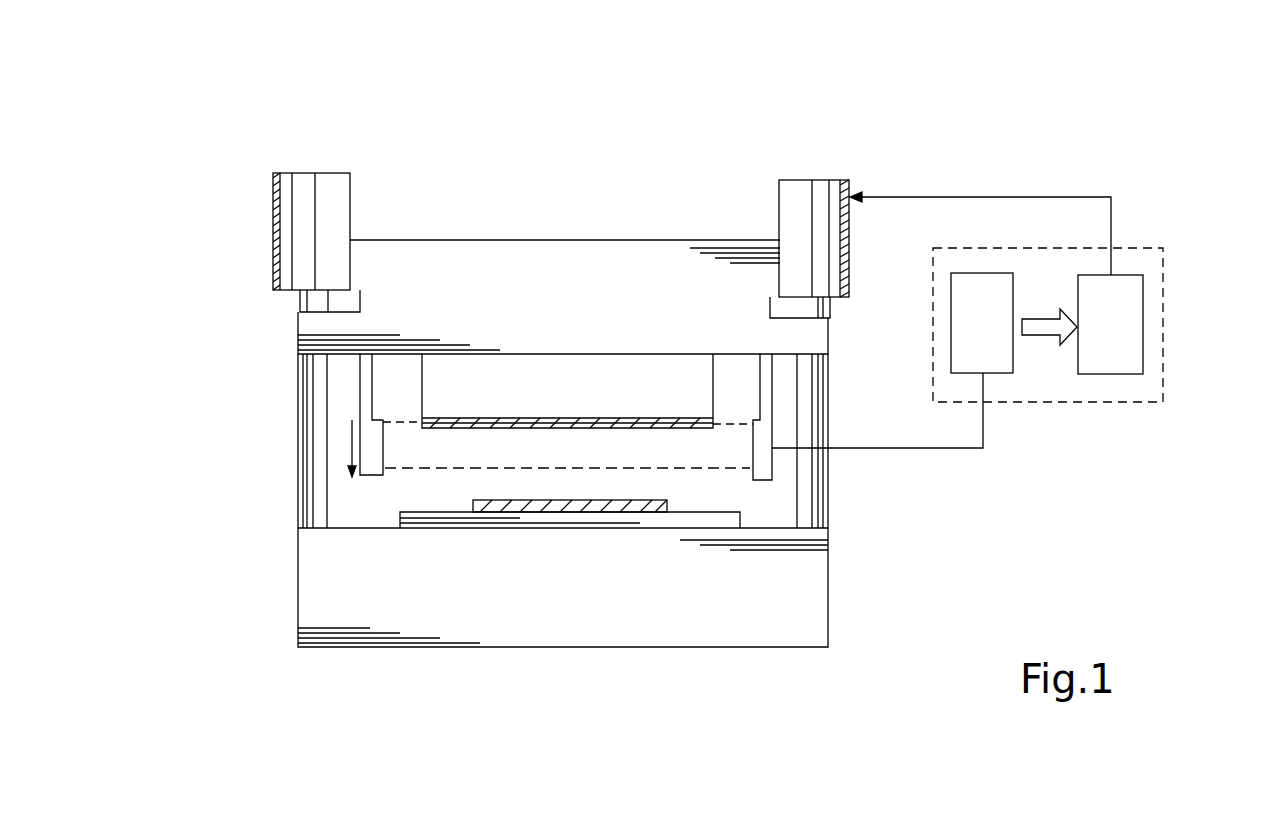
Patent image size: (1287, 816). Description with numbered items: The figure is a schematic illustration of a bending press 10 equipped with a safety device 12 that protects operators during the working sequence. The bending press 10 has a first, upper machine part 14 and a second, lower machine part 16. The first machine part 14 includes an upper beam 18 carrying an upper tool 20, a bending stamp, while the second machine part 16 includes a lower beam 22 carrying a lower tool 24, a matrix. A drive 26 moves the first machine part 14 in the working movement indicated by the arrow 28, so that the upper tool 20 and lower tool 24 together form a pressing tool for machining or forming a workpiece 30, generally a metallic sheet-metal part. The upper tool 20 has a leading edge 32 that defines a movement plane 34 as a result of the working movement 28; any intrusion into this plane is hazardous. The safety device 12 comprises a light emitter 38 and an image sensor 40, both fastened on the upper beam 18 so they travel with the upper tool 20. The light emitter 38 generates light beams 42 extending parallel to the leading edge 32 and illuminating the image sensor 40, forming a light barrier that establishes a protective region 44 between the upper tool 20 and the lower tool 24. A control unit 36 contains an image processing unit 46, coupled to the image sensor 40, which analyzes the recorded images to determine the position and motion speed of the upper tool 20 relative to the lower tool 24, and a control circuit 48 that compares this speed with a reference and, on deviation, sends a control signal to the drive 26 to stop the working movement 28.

The bending press 10 is at (689, 172).
The safety device 12 is at (964, 158).
The first machine part 14 is at (583, 205).
The second machine part 16 is at (446, 662).
The upper beam 18 is at (586, 282).
The upper tool 20 is at (517, 395).
The lower beam 22 is at (485, 628).
The lower tool 24 is at (592, 523).
The drive 26 is at (320, 170).
The arrow 28 is at (352, 443).
The workpiece 30 is at (526, 500).
The leading edge 32 is at (599, 430).
The movement plane 34 is at (437, 458).
The control unit 36 is at (1133, 402).
The light emitter 38 is at (371, 443).
The image sensor 40 is at (762, 427).
The light beams 42 is at (392, 478).
The protective region 44 is at (664, 459).
The image processing unit 46 is at (978, 312).
The control circuit 48 is at (1143, 335).